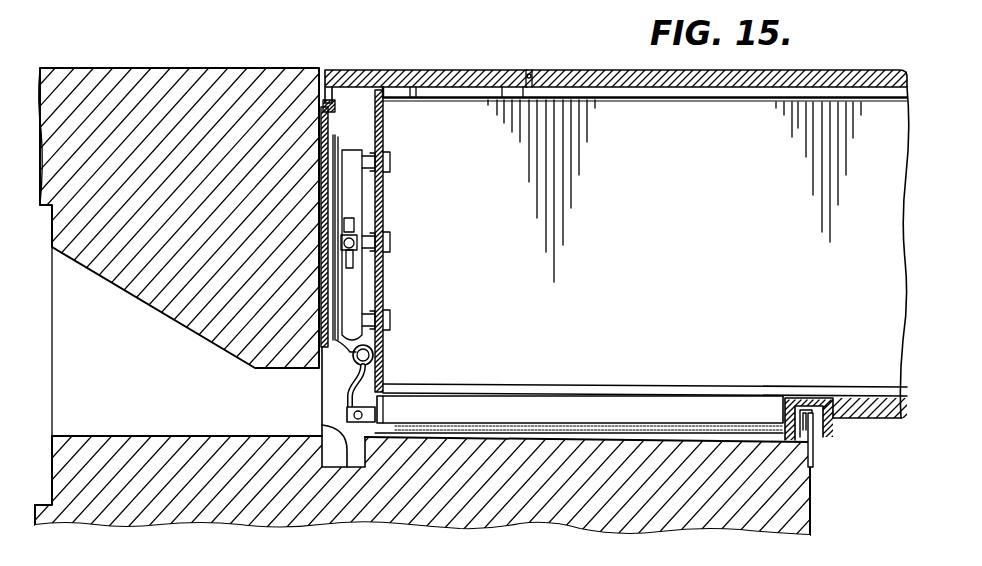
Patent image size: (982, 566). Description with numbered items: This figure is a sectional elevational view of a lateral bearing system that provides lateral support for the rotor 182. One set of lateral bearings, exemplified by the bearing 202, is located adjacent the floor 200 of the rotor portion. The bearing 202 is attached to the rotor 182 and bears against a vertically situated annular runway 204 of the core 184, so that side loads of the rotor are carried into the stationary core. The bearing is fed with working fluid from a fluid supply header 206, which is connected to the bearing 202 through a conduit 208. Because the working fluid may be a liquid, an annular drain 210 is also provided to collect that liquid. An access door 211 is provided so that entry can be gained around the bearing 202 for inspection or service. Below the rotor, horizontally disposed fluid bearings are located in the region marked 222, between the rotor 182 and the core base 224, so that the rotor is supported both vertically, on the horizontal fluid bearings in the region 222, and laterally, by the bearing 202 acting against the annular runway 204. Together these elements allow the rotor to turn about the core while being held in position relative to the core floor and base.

The core 184 is at (237, 98).
The access door 211 is at (420, 72).
The floor 200 is at (613, 82).
The rotor 182 is at (812, 71).
The annular runway 204 is at (331, 118).
The bearing 202 is at (350, 188).
The conduit 208 is at (352, 272).
The fluid supply header 206 is at (375, 355).
The annular drain 210 is at (330, 437).
The region of horizontally disposed fluid bearings 222 is at (638, 410).
The core base 224 is at (770, 490).